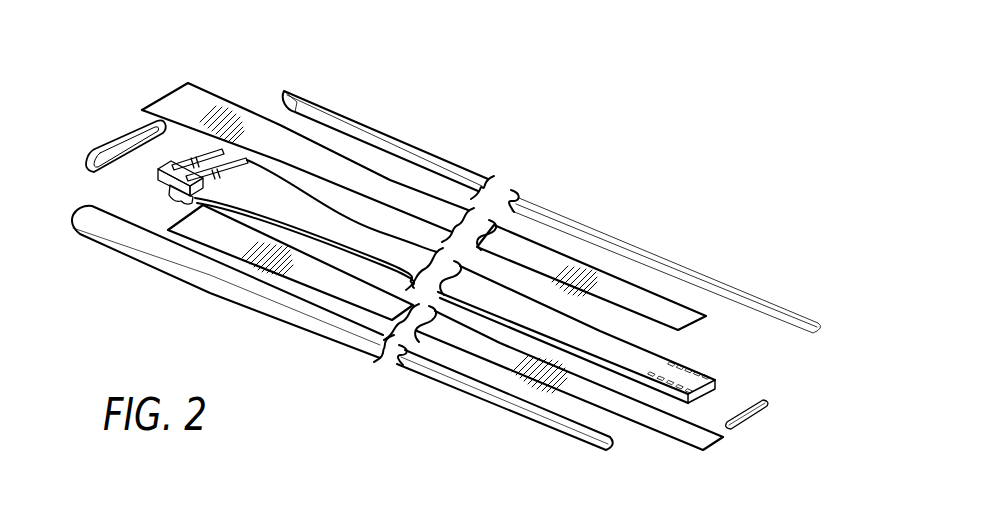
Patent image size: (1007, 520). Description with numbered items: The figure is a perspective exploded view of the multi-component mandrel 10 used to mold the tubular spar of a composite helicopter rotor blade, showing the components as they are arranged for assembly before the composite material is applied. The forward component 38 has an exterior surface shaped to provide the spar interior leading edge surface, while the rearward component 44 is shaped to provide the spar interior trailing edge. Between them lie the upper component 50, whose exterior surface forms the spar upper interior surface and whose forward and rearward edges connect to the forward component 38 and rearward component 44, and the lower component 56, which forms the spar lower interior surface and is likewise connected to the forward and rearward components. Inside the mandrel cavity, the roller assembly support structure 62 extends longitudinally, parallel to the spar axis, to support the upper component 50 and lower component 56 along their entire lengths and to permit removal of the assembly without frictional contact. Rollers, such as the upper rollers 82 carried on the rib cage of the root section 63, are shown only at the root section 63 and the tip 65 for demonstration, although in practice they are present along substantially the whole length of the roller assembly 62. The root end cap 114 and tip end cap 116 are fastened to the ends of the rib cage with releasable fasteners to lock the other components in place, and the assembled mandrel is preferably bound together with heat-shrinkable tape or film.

The multi-component mandrel 10 is at (722, 175).
The forward component 38 is at (347, 113).
The upper component 50 is at (177, 100).
The roller assembly support structure 62 is at (616, 347).
The upper rollers 82 is at (182, 172).
The root section 63 is at (167, 183).
The tip 65 is at (712, 382).
The lower component 56 is at (644, 412).
The rearward component 44 is at (115, 235).
The root end cap 114 is at (113, 143).
The tip end cap 116 is at (760, 410).